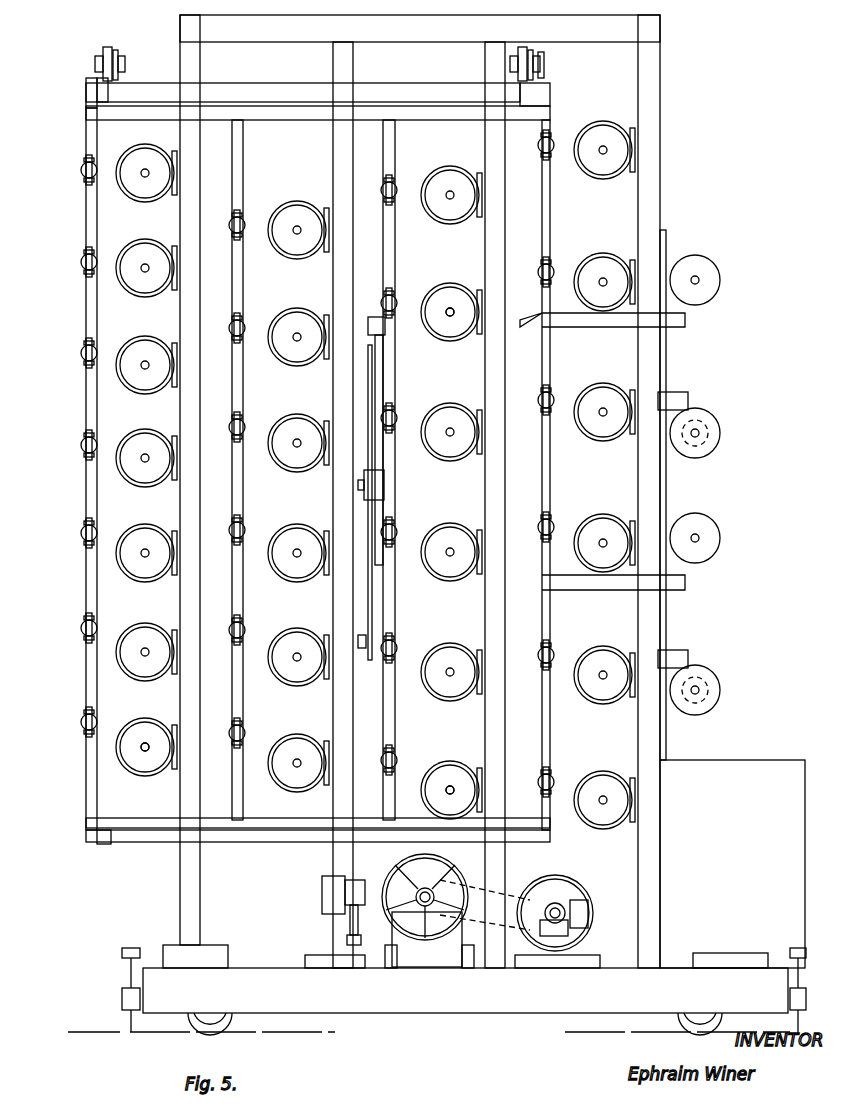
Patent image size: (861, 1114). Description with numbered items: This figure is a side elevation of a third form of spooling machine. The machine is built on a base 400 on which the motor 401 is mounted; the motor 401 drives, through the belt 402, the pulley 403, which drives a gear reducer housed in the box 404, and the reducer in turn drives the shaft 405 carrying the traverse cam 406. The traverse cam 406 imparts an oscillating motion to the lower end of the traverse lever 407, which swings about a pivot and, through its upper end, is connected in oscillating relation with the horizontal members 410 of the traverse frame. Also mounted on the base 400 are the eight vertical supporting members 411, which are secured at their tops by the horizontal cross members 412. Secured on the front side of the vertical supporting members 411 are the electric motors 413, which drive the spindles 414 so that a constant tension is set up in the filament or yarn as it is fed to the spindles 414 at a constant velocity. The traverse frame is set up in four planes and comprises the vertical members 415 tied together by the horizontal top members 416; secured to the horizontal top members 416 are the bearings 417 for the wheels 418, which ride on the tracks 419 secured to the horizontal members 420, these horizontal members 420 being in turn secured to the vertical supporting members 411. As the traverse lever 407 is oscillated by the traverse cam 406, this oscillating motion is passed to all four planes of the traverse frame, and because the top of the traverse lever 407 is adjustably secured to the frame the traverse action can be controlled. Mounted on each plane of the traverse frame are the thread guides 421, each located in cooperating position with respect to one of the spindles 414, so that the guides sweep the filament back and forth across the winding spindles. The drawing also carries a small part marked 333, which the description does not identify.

The base 400 is at (405, 1015).
The motor 401 is at (580, 905).
The belt 402 is at (470, 880).
The pulley 403 is at (385, 950).
The box 404 is at (470, 950).
The shaft 405 is at (425, 915).
The traverse cam 406 is at (385, 865).
The traverse lever 407 is at (370, 590).
The horizontal members of the traverse frame 410 is at (385, 335).
The vertical supporting members 411 is at (353, 65).
The horizontal cross members 412 is at (300, 28).
The electric motors 413 is at (445, 220).
The spindles 414 is at (450, 305).
The vertical members 415 is at (243, 383).
The horizontal top members 416 is at (438, 115).
The bearings 417 is at (545, 68).
The wheels 418 is at (112, 47).
The tracks 419 is at (113, 95).
The horizontal members 420 is at (418, 92).
The thread guides 421 is at (85, 170).
The stop 333 is at (358, 640).